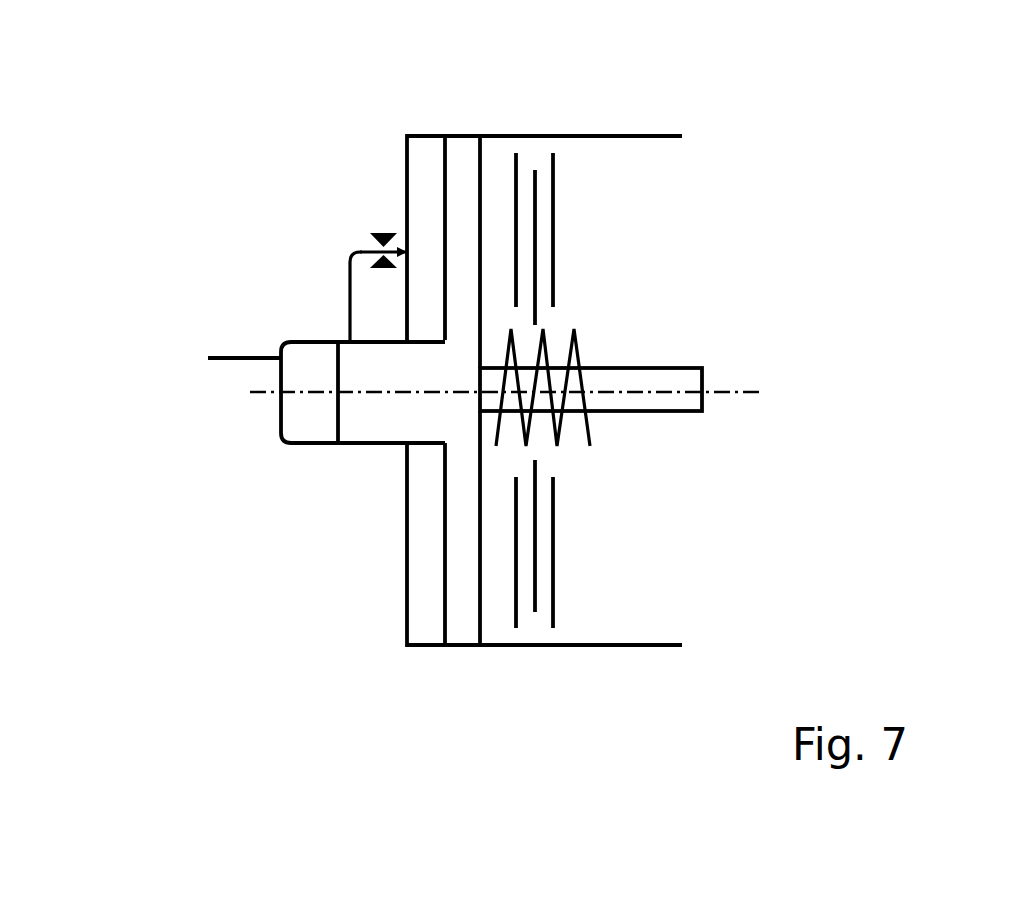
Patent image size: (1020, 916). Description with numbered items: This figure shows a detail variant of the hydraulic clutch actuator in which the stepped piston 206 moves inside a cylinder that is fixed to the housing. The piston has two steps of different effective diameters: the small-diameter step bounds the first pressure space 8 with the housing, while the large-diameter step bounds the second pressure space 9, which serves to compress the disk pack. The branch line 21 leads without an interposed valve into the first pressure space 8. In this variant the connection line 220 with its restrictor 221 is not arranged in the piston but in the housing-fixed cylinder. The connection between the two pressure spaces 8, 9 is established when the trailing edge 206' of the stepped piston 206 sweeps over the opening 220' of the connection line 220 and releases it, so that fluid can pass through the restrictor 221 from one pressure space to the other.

The first pressure space 8 is at (310, 430).
The second pressure space 9 is at (420, 172).
The branch line 21 is at (240, 358).
The stepped piston 206 is at (234, 487).
The trailing edge 206' is at (180, 383).
The connection line 220 is at (528, 140).
The opening 220' is at (210, 183).
The restrictor 221 is at (370, 220).